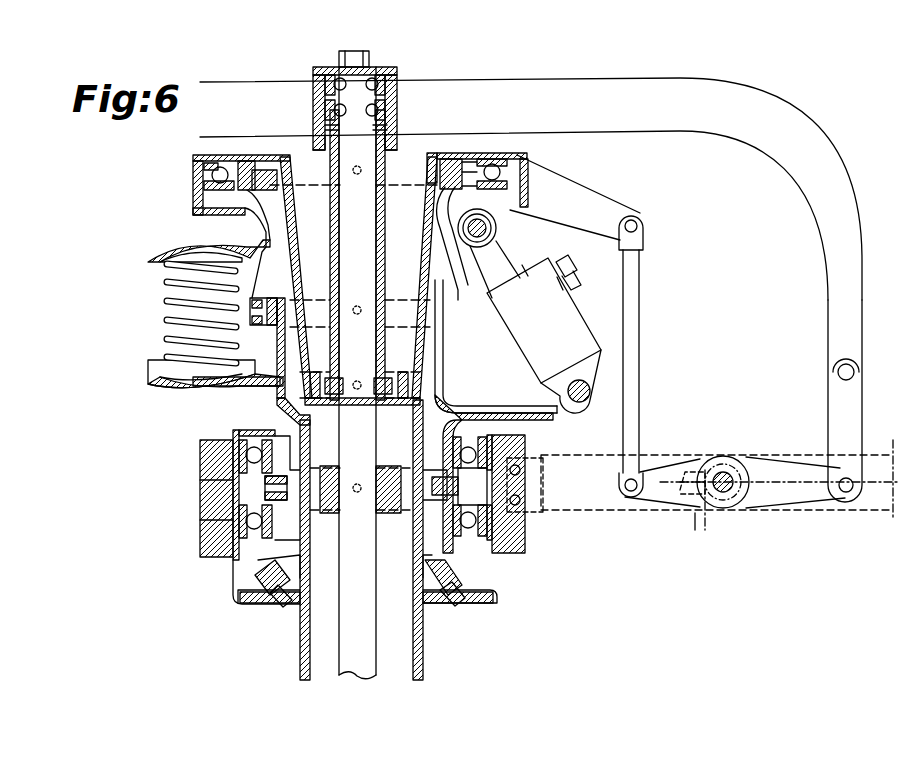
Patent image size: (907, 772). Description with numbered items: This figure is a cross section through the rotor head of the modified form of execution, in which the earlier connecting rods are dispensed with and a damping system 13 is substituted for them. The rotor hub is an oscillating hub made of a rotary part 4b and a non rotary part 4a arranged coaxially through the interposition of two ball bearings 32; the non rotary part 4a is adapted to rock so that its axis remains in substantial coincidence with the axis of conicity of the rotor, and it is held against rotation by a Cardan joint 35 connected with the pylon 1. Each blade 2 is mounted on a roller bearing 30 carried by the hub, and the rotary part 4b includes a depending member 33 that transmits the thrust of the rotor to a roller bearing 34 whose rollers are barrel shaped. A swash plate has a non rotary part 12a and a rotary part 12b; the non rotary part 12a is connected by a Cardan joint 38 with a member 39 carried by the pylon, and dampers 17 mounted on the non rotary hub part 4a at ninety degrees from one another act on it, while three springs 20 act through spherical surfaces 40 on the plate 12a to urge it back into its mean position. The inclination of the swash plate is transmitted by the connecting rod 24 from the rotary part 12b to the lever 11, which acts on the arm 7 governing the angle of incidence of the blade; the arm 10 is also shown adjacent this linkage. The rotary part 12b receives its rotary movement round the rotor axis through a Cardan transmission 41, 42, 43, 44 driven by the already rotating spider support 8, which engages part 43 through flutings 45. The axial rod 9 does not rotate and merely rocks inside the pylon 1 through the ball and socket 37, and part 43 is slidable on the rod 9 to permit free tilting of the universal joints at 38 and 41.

The pylon 1 is at (307, 647).
The blade 2 is at (591, 512).
The non rotary part of the hub 4a is at (487, 415).
The rotary part of the hub 4b is at (514, 446).
The arm 7 is at (701, 531).
The spider support 8 is at (513, 95).
The axial rod 9 is at (358, 567).
The handle arm 10 is at (845, 421).
The lever 11 is at (660, 497).
The non rotary part of the swash plate 12a is at (495, 205).
The rotary part of the swash plate 12b is at (575, 197).
The damping system 13 is at (500, 264).
The damper 17 is at (566, 326).
The spring 20 is at (167, 298).
The connecting rod 24 is at (633, 327).
The roller bearing 30 is at (531, 513).
The ball bearing 32 is at (200, 452).
The depending member 33 is at (232, 597).
The roller bearing 34 is at (233, 607).
The Cardan joint 35 is at (273, 488).
The ball and socket 37 is at (360, 488).
The Cardan joint 38 is at (241, 250).
The member 39 is at (284, 393).
The spherical surface 40 is at (167, 250).
The Cardan transmission 41 is at (447, 153).
The Cardan transmission 42 is at (422, 210).
The part of the Cardan joint 43 is at (378, 250).
The Cardan transmission 44 is at (418, 373).
The flutings 45 is at (392, 145).